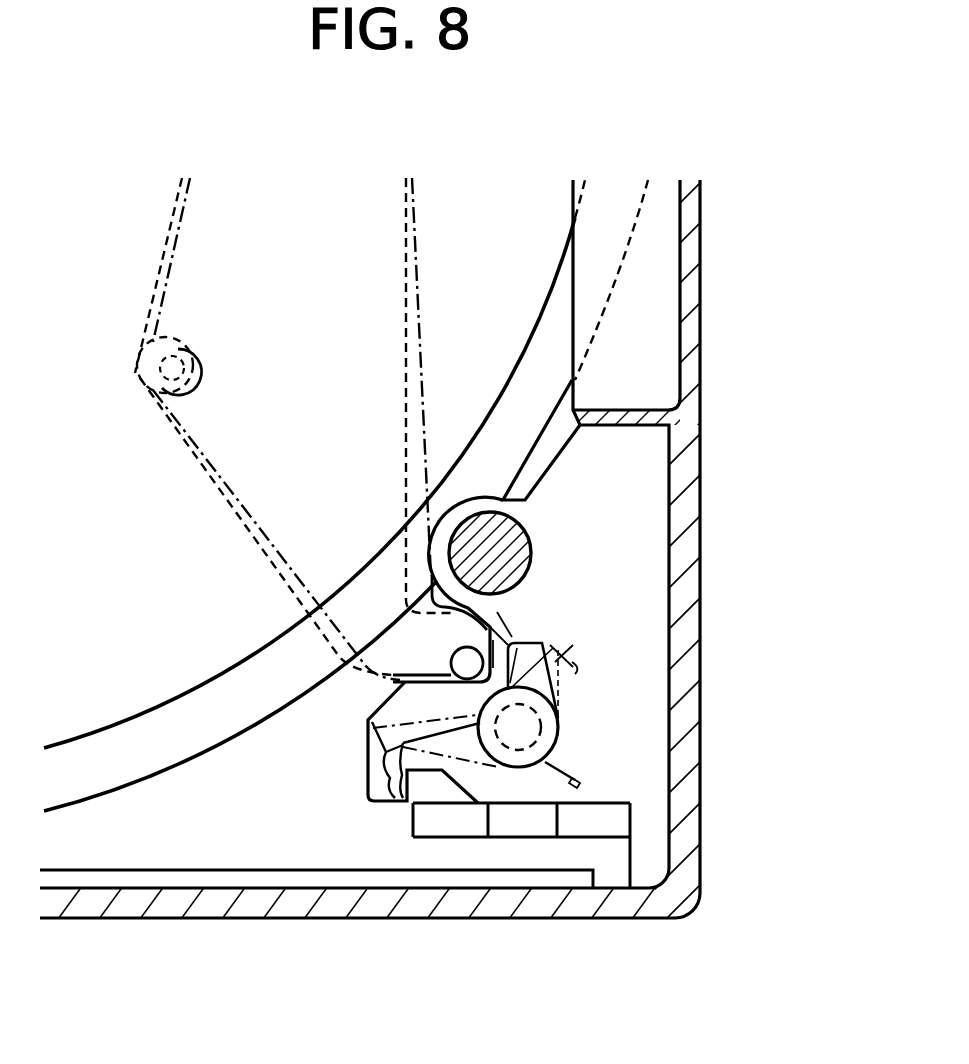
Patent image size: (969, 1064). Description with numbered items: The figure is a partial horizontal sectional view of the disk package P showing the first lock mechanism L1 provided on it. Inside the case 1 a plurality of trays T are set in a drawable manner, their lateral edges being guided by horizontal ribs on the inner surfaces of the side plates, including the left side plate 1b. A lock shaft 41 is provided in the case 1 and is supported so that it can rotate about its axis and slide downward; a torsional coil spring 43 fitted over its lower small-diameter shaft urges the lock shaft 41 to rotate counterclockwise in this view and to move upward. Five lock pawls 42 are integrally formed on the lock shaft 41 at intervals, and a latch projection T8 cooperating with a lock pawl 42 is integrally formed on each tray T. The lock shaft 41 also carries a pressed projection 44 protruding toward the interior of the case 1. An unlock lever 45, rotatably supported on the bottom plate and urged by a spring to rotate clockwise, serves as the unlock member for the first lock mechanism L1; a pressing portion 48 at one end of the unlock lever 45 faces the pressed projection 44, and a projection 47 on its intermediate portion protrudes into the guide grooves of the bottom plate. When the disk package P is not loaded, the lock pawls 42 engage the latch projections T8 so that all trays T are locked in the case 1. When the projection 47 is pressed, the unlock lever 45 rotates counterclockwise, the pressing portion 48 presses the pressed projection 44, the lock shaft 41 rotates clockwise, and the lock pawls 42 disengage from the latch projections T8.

The case 1 is at (270, 928).
The left side plate 1b is at (173, 898).
The disk package P is at (723, 397).
The side wall e is at (690, 580).
The tray T is at (93, 770).
The latch projection T8 is at (436, 795).
The first lock mechanism L1 is at (515, 793).
The lock shaft 41 is at (562, 714).
The lock pawl 42 is at (376, 804).
The torsional coil spring 43 is at (560, 762).
The pressed projection 44 is at (545, 643).
The unlock lever 45 is at (240, 525).
The projection 47 is at (140, 380).
The pressing portion 48 is at (495, 623).